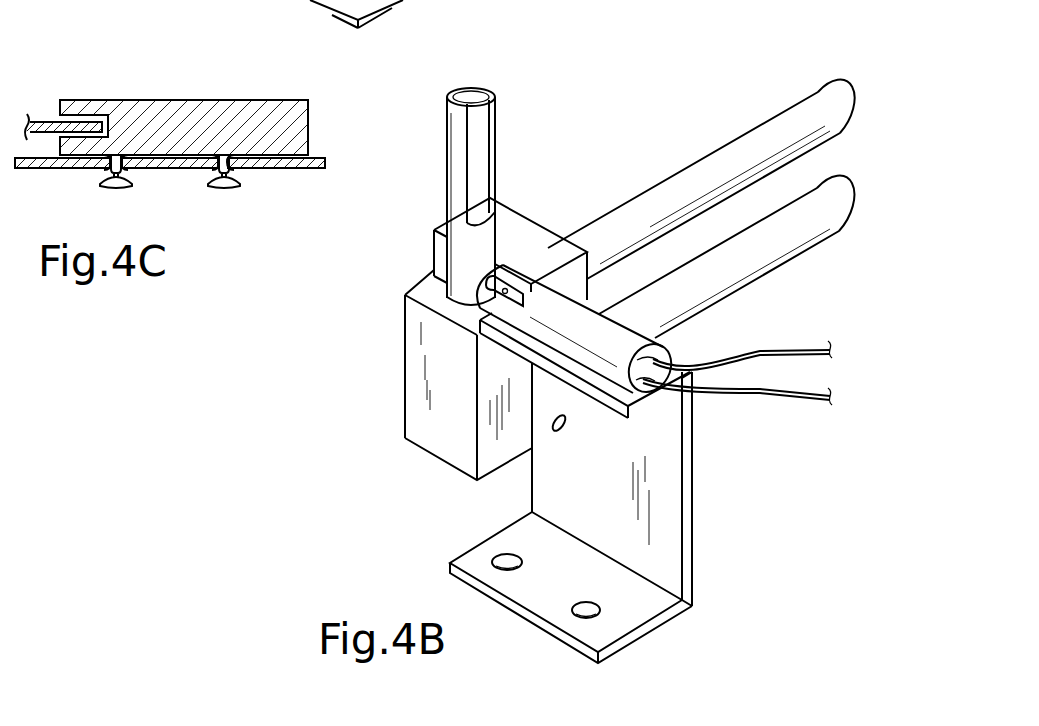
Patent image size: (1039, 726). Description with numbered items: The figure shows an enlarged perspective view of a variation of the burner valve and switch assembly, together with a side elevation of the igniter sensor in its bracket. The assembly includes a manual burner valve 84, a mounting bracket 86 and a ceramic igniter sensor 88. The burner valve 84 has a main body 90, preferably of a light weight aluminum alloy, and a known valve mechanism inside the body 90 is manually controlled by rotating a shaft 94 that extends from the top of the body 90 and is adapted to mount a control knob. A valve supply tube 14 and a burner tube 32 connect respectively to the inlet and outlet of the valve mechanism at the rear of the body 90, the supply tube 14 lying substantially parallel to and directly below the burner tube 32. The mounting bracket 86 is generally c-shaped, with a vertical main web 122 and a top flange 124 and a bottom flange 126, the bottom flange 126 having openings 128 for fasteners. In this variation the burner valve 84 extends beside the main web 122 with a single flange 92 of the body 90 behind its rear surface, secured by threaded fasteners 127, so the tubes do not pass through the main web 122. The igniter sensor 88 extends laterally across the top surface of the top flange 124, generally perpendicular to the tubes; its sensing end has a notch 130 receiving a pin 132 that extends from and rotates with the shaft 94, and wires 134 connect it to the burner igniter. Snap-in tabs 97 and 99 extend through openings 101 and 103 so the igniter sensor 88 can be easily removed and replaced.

In FIG. 4B, the valve supply tube 14 is at (751, 281).
In FIG. 4B, the burner tube 32 is at (768, 117).
In FIG. 4B, the manual burner valve 84 is at (398, 356).
In FIG. 4B, the mounting bracket 86 is at (703, 517).
In FIG. 4C, the ceramic igniter sensor 88 is at (190, 100).
In FIG. 4B, the ceramic igniter sensor 88 is at (618, 322).
In FIG. 4B, the main body 90 is at (404, 408).
In FIG. 4A, the flange 92 is at (295, 0).
In FIG. 4B, the flange 92 is at (434, 248).
In FIG. 4B, the shaft 94 is at (447, 152).
In FIG. 4C, the snap-in tab 97 is at (117, 187).
In FIG. 4C, the snap-in tab 99 is at (219, 188).
In FIG. 4C, the opening 101 is at (122, 174).
In FIG. 4C, the opening 103 is at (233, 174).
In FIG. 4B, the main web 122 is at (693, 548).
In FIG. 4C, the top flange 124 is at (288, 168).
In FIG. 4B, the top flange 124 is at (645, 408).
In FIG. 4A, the bottom flange 126 is at (428, 0).
In FIG. 4B, the bottom flange 126 is at (452, 560).
In FIG. 4A, the threaded fastener 127 is at (233, 0).
In FIG. 4B, the threaded fastener 127 is at (553, 430).
In FIG. 4A, the opening 128 is at (394, 0).
In FIG. 4B, the opening 128 is at (497, 557).
In FIG. 4C, the notch 130 is at (40, 122).
In FIG. 4B, the notch 130 is at (500, 293).
In FIG. 4B, the pin 132 is at (455, 322).
In FIG. 4B, the wires 134 is at (780, 350).